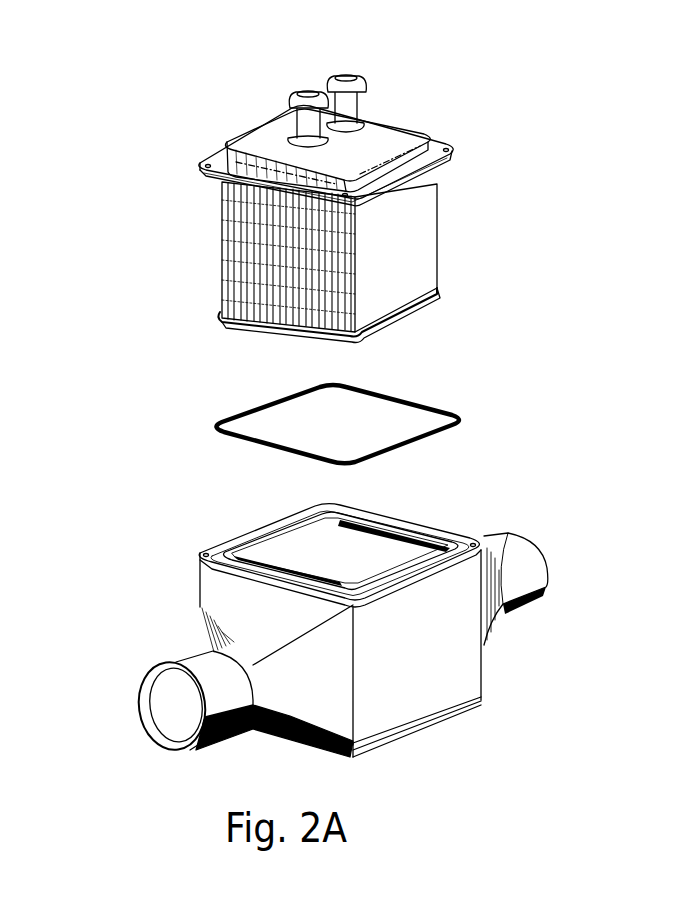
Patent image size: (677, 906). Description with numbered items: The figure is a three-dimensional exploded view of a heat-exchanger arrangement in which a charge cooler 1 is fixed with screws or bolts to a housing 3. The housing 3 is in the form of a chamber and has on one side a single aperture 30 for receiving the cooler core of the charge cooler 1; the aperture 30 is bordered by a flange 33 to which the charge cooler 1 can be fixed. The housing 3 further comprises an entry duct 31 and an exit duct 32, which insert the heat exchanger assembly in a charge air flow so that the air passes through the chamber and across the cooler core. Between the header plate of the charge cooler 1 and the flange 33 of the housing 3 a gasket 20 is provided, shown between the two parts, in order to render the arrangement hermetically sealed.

The charge cooler 1 is at (190, 190).
The gasket 20 is at (427, 395).
The housing 3 is at (357, 598).
The aperture 30 is at (313, 560).
The flange 33 is at (428, 520).
The entry duct 31 is at (178, 705).
The exit duct 32 is at (525, 558).